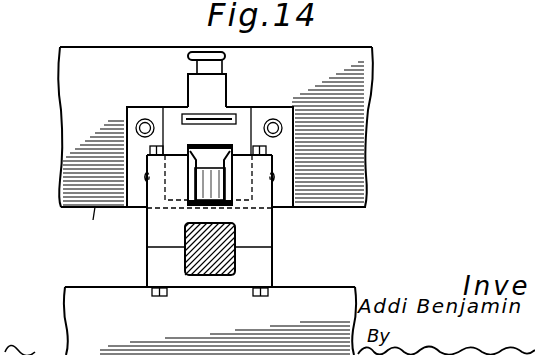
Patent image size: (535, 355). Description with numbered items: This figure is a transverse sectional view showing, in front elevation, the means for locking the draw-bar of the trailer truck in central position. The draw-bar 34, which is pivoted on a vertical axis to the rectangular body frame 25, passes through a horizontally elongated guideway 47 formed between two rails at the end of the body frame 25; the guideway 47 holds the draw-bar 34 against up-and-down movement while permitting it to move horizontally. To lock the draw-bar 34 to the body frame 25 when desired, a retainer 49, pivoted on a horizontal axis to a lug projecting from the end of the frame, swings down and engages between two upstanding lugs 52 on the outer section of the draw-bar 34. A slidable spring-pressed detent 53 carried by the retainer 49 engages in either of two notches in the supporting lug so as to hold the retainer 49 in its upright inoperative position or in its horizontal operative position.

The body frame 25 is at (355, 87).
The draw-bar 34 is at (262, 229).
The guideway 47 is at (80, 287).
The retainer 49 is at (218, 89).
The upstanding lugs 52 is at (247, 163).
The spring-pressed detent 53 is at (188, 57).